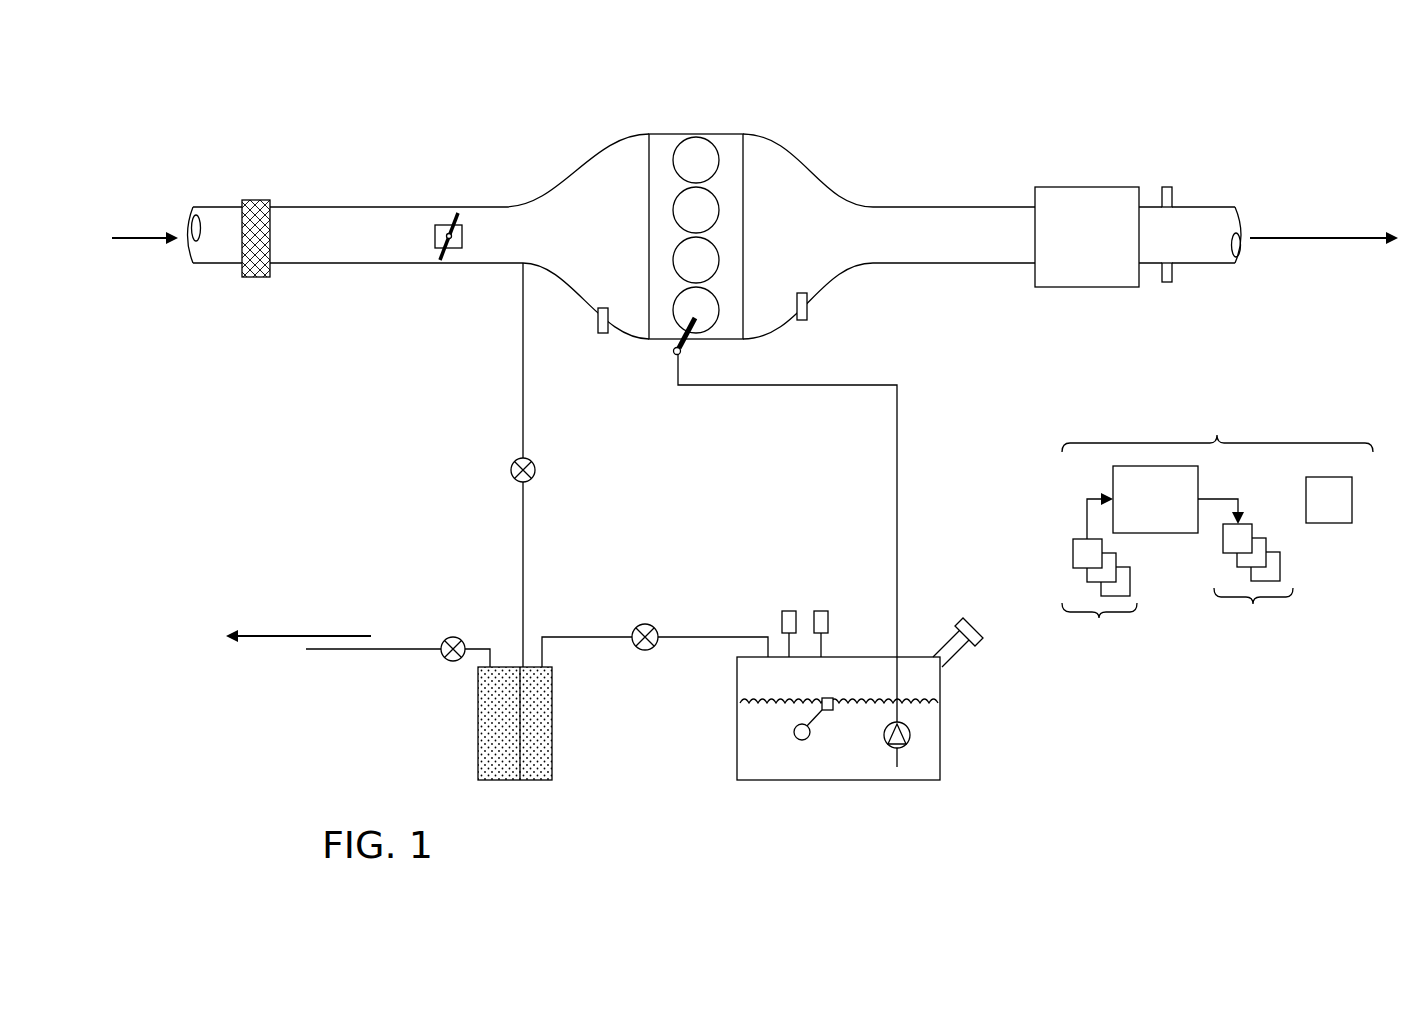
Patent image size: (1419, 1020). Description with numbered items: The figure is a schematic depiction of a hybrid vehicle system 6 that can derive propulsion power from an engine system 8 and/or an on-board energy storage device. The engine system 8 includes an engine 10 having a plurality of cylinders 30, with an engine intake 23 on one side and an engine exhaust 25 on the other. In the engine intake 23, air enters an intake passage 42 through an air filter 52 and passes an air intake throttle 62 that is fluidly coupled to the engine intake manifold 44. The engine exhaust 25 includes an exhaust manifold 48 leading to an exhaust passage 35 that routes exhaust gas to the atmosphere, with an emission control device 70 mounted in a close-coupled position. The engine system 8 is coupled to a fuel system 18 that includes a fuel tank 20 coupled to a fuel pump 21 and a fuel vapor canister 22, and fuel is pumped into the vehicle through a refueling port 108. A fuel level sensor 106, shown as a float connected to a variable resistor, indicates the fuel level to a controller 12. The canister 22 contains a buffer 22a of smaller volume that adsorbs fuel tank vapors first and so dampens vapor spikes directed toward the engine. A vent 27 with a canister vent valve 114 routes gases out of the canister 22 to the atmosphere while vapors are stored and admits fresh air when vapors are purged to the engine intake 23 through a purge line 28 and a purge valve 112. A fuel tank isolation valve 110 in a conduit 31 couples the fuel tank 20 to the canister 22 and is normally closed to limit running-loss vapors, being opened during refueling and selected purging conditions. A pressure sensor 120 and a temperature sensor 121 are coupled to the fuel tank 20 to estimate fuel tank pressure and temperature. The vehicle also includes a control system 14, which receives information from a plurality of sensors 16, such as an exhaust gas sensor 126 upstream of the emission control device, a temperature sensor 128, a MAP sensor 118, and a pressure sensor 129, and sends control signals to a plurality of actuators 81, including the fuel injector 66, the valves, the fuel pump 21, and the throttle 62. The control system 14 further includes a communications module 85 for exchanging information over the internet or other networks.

The hybrid vehicle system 6 is at (208, 112).
The engine system 8 is at (1270, 109).
The engine 10 is at (743, 218).
The controller 12 is at (1155, 499).
The control system 14 is at (1217, 423).
The sensors 16 is at (1099, 580).
The fuel system 18 is at (980, 800).
The fuel tank 20 is at (737, 780).
The fuel pump 21 is at (910, 740).
The fuel vapor canister 22 is at (495, 780).
The buffer 22a is at (538, 780).
The engine intake 23 is at (577, 160).
The engine exhaust 25 is at (851, 168).
The vent 27 is at (426, 650).
The purge line 28 is at (523, 428).
The cylinders 30 is at (717, 152).
The conduit 31 is at (695, 637).
The exhaust passage 35 is at (1215, 207).
The intake passage 42 is at (220, 266).
The engine intake manifold 44 is at (577, 236).
The exhaust manifold 48 is at (889, 236).
The air filter 52 is at (262, 200).
The air intake throttle 62 is at (462, 242).
The fuel injector 66 is at (690, 343).
The emission control device 70 is at (1076, 187).
The actuators 81 is at (1246, 572).
The communications module 85 is at (1329, 500).
The fuel level sensor 106 is at (830, 698).
The refueling port 108 is at (975, 630).
The fuel tank isolation valve 110 is at (640, 625).
The purge valve 112 is at (532, 461).
The canister vent valve 114 is at (461, 640).
The MAP sensor 118 is at (598, 318).
The pressure sensor 120 is at (828, 617).
The temperature sensor 121 is at (789, 611).
The exhaust gas sensor 126 is at (807, 300).
The temperature sensor 128 is at (1167, 282).
The pressure sensor 129 is at (1167, 187).